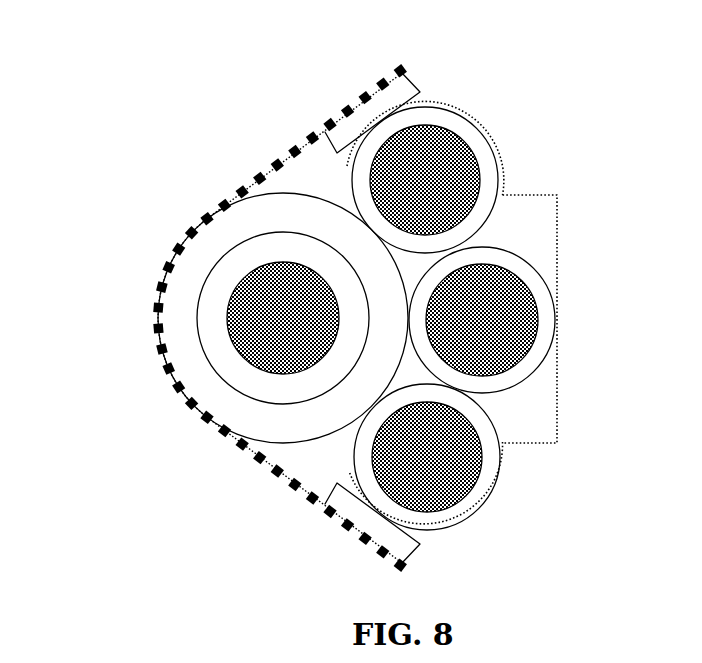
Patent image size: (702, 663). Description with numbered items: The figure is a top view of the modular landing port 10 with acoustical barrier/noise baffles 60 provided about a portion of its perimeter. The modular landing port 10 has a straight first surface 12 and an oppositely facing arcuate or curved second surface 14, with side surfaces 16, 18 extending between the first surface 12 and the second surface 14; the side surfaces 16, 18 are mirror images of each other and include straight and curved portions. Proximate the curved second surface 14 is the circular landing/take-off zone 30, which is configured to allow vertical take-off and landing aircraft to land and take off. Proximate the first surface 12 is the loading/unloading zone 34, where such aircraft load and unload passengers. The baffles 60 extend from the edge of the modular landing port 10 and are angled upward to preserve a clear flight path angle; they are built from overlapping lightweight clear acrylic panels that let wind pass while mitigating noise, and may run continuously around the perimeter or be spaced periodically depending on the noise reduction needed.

The modular landing port 10 is at (487, 78).
The first surface 12 is at (557, 392).
The second surface 14 is at (153, 315).
The side surface 16 is at (287, 481).
The side surface 18 is at (279, 152).
The landing/take-off zone 30 is at (263, 335).
The loading/unloading zone 34 is at (445, 170).
The acoustical barrier/noise baffles 60 is at (240, 192).